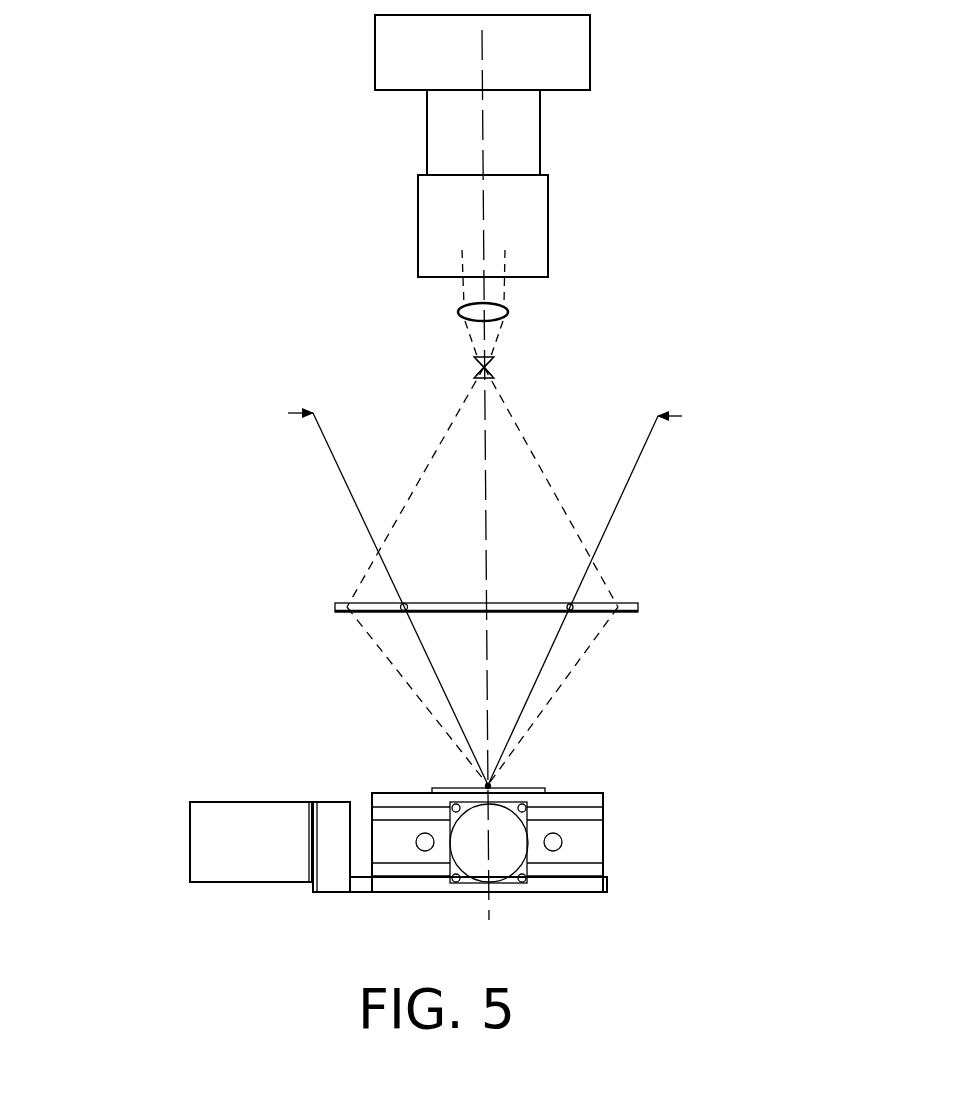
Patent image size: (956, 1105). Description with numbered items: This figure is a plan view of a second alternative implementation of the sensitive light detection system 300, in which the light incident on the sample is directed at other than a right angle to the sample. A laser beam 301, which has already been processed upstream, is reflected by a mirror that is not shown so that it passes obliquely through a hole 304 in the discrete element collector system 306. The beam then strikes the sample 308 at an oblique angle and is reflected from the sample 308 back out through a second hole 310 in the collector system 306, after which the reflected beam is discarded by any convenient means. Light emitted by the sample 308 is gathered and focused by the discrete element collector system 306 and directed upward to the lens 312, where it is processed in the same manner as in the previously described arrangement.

The sensitive light detection system 300 is at (147, 295).
The laser beam 301 is at (343, 478).
The hole 304 is at (408, 602).
The discrete element collector system 306 is at (335, 608).
The sample 308 is at (473, 783).
The hole 310 is at (575, 600).
The lens 312 is at (522, 305).